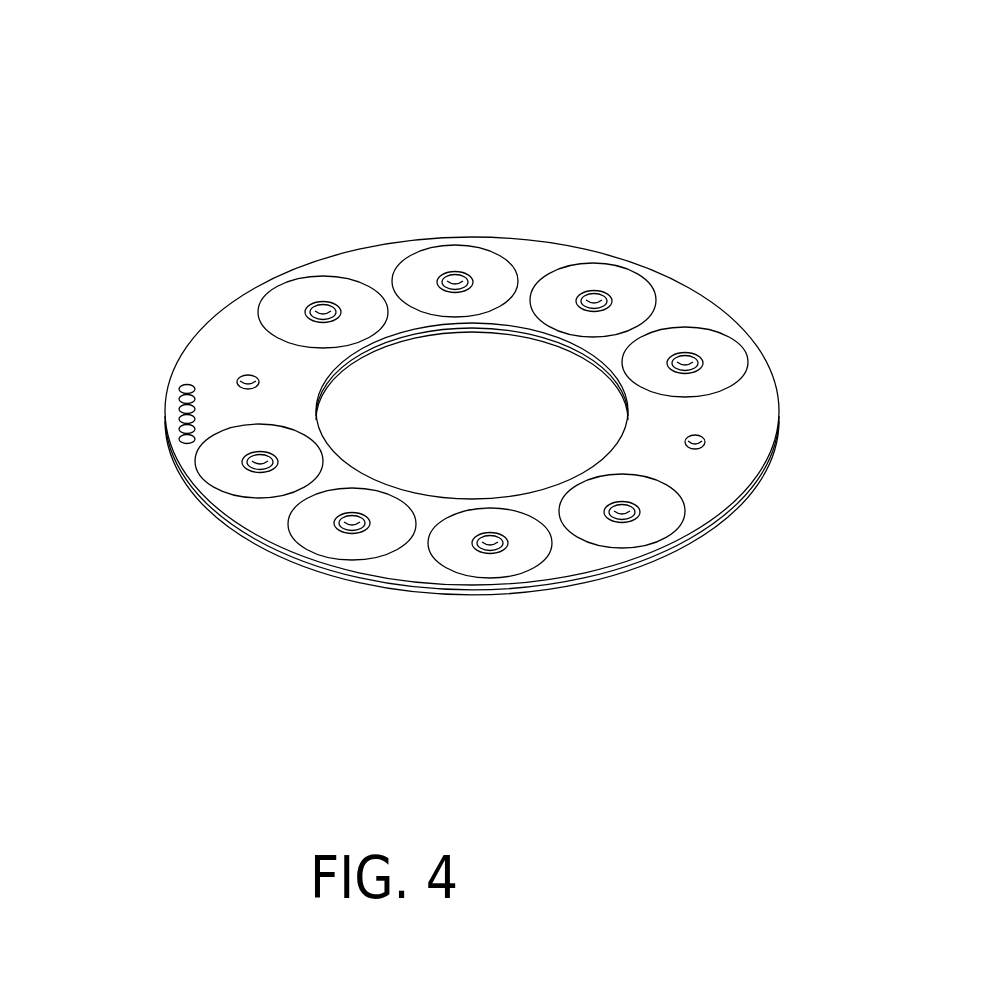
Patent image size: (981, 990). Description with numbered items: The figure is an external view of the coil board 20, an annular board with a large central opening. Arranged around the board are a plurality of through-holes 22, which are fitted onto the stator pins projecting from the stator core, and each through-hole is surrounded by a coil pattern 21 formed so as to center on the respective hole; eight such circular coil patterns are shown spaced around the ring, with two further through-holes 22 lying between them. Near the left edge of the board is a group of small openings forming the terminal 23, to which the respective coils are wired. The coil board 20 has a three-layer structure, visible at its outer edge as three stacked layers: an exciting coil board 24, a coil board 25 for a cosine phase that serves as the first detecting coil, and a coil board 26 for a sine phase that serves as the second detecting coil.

The coil board 20 is at (550, 90).
The coil pattern 21 is at (703, 327).
The through-hole 22 is at (594, 290).
The terminal 23 is at (183, 393).
The exciting coil board 24 is at (740, 500).
The coil board for a cosine phase 25 is at (710, 528).
The coil board for a sine phase 26 is at (667, 552).